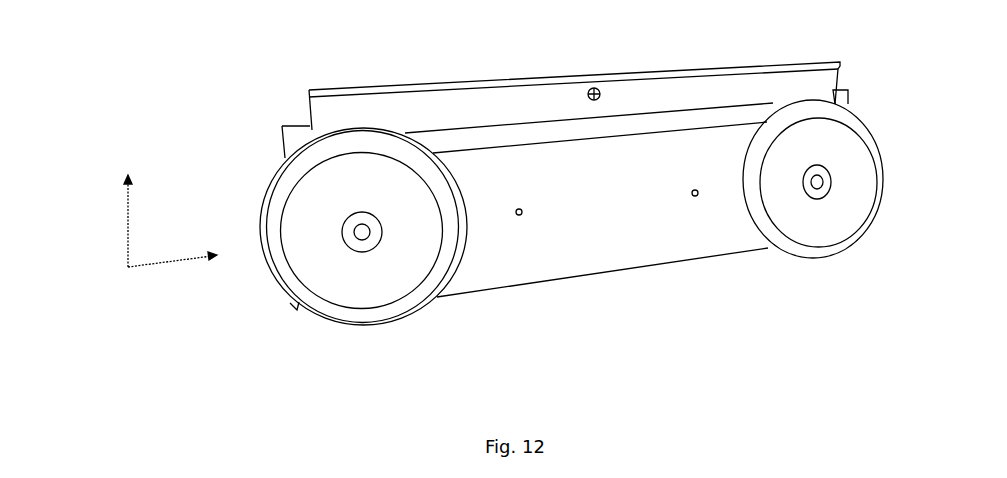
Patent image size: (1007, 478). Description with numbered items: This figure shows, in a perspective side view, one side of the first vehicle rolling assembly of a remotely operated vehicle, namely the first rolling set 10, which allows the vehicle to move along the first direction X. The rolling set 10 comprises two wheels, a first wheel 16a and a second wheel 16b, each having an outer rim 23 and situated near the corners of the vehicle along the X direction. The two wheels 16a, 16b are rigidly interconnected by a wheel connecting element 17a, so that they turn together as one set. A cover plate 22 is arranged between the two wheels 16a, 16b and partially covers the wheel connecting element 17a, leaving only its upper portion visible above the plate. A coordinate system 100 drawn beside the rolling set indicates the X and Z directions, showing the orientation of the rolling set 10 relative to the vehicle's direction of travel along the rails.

The first rolling set 10 is at (604, 201).
The coordinate system 100 is at (95, 200).
The first wheel 16a is at (338, 290).
The second wheel 16b is at (833, 188).
The wheel connecting element 17a is at (615, 97).
The cover plate 22 is at (589, 204).
The outer rim 23 is at (858, 122).